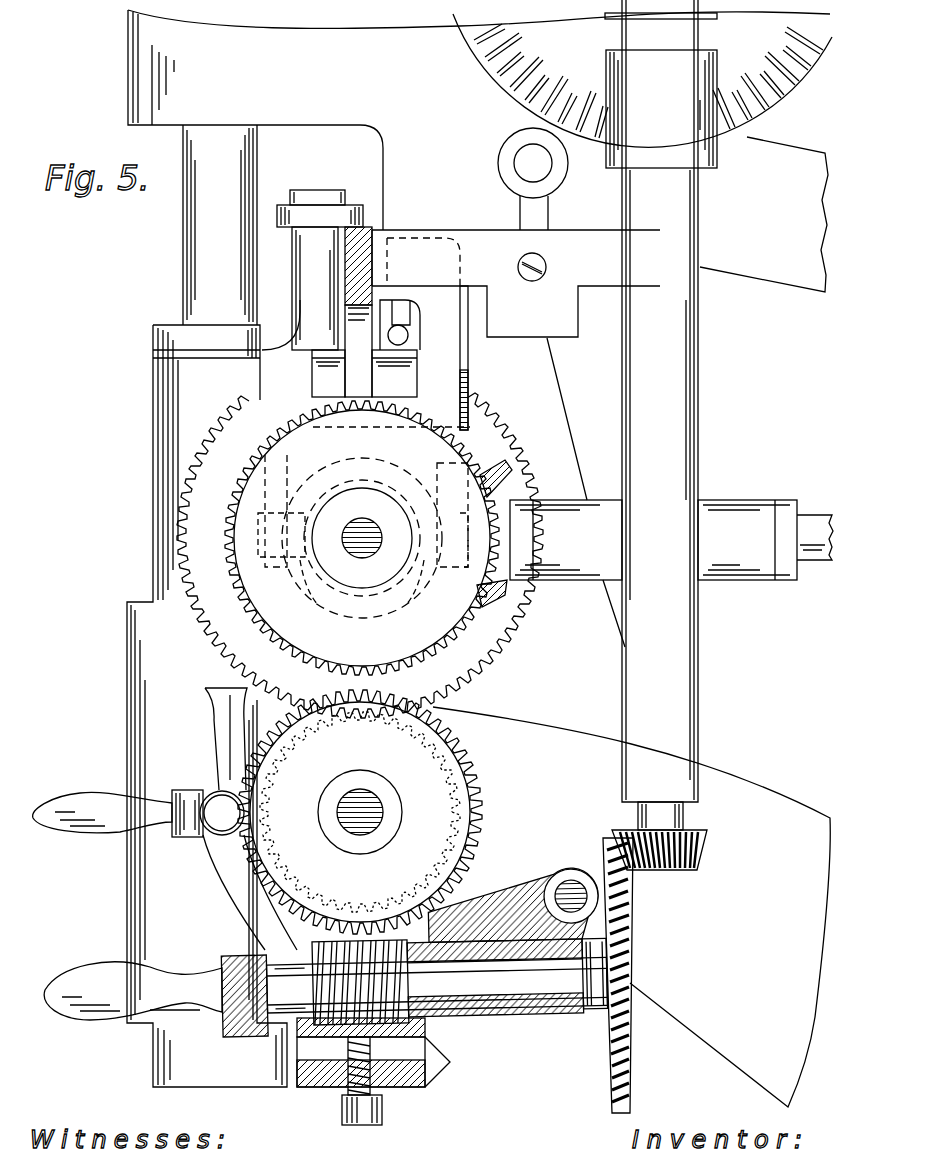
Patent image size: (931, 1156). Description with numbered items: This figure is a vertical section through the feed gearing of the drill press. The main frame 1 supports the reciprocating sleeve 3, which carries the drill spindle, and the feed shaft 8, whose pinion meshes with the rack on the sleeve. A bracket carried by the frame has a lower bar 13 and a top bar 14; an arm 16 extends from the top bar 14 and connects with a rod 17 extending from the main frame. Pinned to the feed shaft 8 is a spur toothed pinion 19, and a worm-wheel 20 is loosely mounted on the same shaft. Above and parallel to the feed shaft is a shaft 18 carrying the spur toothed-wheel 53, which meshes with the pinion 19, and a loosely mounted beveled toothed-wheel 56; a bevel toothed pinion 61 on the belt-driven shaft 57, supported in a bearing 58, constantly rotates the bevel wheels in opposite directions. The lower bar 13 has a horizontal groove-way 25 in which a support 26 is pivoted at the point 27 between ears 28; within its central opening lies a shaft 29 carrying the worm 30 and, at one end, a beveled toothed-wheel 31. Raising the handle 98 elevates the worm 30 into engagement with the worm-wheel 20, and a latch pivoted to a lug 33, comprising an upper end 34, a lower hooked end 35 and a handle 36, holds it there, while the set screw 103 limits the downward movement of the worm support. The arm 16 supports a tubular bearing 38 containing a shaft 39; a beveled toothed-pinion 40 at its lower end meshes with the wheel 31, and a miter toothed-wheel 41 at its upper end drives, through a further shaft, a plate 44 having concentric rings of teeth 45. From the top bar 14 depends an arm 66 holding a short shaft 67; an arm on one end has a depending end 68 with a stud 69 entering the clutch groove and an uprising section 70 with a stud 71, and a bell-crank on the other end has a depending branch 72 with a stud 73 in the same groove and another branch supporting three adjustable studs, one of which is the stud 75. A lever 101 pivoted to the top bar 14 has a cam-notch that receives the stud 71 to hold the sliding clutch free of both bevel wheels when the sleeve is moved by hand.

The main frame 1 is at (479, 120).
The reciprocating sleeve 3 is at (160, 352).
The feed shaft 8 is at (384, 812).
The lower bar 13 is at (317, 1107).
The top bar 14 is at (375, 230).
The arm 16 is at (516, 283).
The rod 17 is at (533, 179).
The shaft 18 is at (362, 538).
The spur-toothed pinion 19 is at (360, 812).
The worm-wheel 20 is at (375, 812).
The groove-way 25 is at (403, 1053).
The support 26 is at (497, 1015).
The pivot point 27 is at (552, 888).
The ears 28 is at (413, 952).
The shaft 29 is at (437, 985).
The worm 30 is at (393, 975).
The beveled toothed-wheel 31 is at (622, 955).
The lug 33 is at (206, 790).
The upper end 34 is at (216, 739).
The lower hooked end 35 is at (246, 892).
The handle 36 is at (102, 812).
The tubular bearing 38 is at (661, 401).
The shaft 39 is at (688, 816).
The beveled toothed-pinion 40 is at (659, 861).
The miter toothed-wheel 41 is at (661, 92).
The plate 44 is at (642, 80).
The concentric rings of teeth 45 is at (648, 81).
The spur toothed-wheel 53 is at (360, 551).
The beveled toothed-wheel 56 is at (362, 538).
The shaft 57 is at (815, 554).
The bearing 58 is at (747, 540).
The bevel toothed pinion 61 is at (506, 540).
The arm 66 is at (364, 373).
The short shaft 67 is at (468, 388).
The depending end 68 is at (287, 505).
The stud 69 is at (293, 582).
The uprising section 70 is at (315, 288).
The stud 71 is at (317, 185).
The branch 72 is at (452, 515).
The stud 73 is at (429, 582).
The stud 75 is at (410, 334).
The handle 98 is at (133, 991).
The lever 101 is at (314, 228).
The set screw 103 is at (361, 1095).